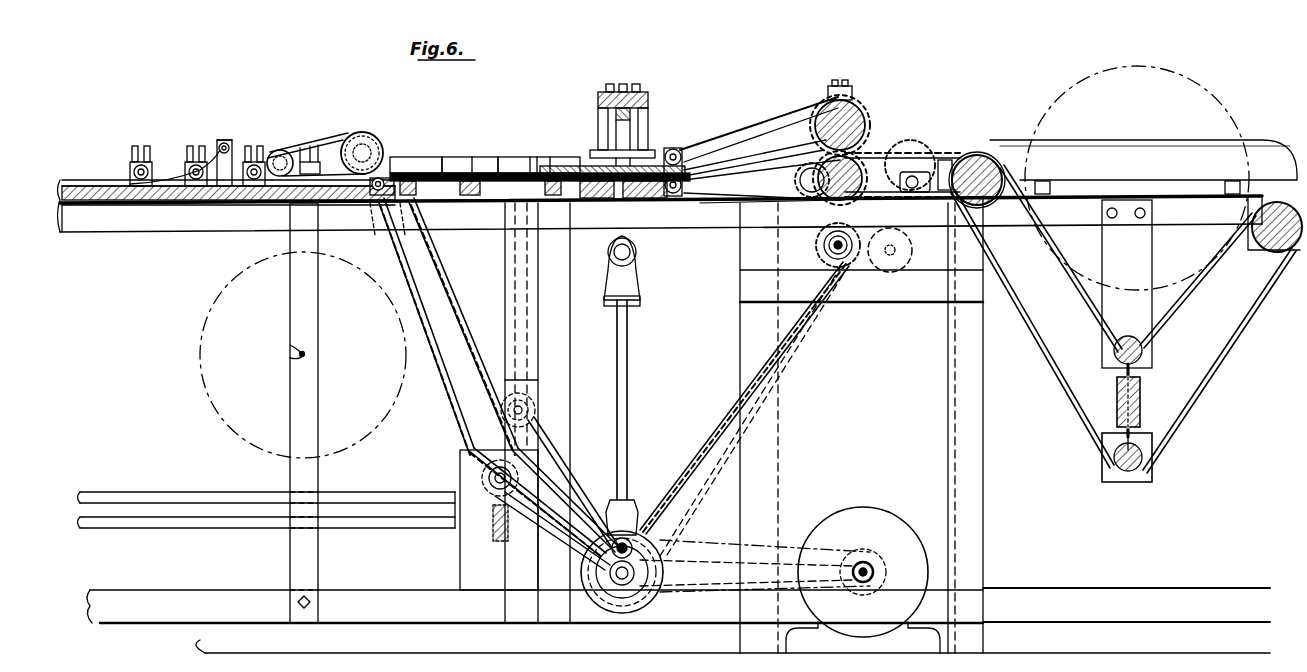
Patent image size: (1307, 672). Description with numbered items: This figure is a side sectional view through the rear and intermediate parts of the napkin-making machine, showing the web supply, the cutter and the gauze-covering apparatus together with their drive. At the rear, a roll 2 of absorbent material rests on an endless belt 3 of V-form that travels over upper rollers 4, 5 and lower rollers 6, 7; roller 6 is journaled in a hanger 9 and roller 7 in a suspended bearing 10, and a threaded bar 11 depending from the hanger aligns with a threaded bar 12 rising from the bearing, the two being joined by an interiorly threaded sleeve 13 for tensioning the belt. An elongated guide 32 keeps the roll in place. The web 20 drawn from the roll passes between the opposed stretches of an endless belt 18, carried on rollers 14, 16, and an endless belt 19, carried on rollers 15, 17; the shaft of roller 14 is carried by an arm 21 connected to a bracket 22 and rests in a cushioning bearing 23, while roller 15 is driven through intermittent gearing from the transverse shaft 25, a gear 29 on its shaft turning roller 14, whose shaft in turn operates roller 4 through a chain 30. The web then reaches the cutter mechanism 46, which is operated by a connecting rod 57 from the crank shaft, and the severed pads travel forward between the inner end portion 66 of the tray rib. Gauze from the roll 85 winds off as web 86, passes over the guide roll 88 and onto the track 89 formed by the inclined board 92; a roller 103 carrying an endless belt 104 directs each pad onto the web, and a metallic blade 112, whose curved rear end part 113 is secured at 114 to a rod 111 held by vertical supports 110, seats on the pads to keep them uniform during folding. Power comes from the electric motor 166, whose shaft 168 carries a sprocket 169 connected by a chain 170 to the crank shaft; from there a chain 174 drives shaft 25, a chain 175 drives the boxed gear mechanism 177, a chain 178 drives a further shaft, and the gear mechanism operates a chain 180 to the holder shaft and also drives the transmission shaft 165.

The roll of absorbent material 2 is at (1180, 274).
The endless belt 3 is at (1036, 344).
The upper roller 4 is at (980, 158).
The upper roller 5 is at (1292, 255).
The lower roller 6 is at (1148, 345).
The lower roller 7 is at (1114, 460).
The hanger 9 is at (1140, 243).
The suspended bearing 10 is at (495, 157).
The threaded bar 11 is at (1135, 371).
The threaded bar 12 is at (1120, 428).
The interiorly threaded sleeve 13 is at (1140, 402).
The roller 14 is at (862, 115).
The roller 15 is at (862, 178).
The roller 16 is at (700, 160).
The roller 17 is at (675, 196).
The endless belt 18 is at (752, 138).
The endless belt 19 is at (762, 226).
The web 20 is at (714, 156).
The arm 21 is at (768, 130).
The bracket 22 is at (674, 148).
The cushioning bearing 23 is at (848, 100).
The shaft 25 is at (918, 145).
The gear 29 is at (800, 181).
The chain 30 is at (946, 160).
The elongated guide 32 is at (1085, 150).
The cutter mechanism 46 is at (595, 100).
The connecting rod 57 is at (628, 320).
The inner end portion of rib 66 is at (452, 157).
The roll of gauze 85 is at (212, 312).
The gauze web 86 is at (400, 292).
The guide roll 88 is at (384, 178).
The track 89 is at (240, 186).
The board 92 is at (222, 200).
The roller 103 is at (366, 148).
The endless belt 104 is at (330, 140).
The vertical support 110 is at (215, 145).
The rod 111 is at (230, 140).
The metallic blade 112 is at (114, 205).
The reduced rear end part 113 is at (182, 180).
The securing point 114 is at (222, 138).
The transmission shaft 165 is at (237, 522).
The electric motor 166 is at (860, 505).
The motor shaft 168 is at (872, 560).
The sprocket 169 is at (850, 566).
The chain 170 is at (714, 545).
The chain 174 is at (800, 352).
The chain 175 is at (585, 492).
The boxed gear mechanism 177 is at (478, 552).
The chain 178 is at (578, 442).
The chain 180 is at (420, 274).